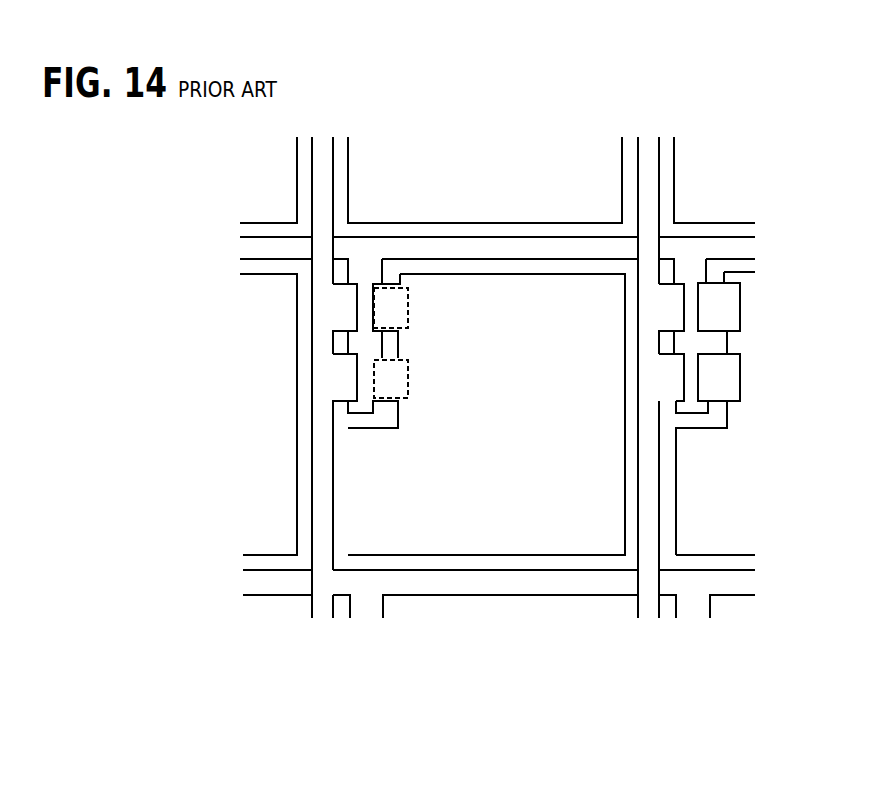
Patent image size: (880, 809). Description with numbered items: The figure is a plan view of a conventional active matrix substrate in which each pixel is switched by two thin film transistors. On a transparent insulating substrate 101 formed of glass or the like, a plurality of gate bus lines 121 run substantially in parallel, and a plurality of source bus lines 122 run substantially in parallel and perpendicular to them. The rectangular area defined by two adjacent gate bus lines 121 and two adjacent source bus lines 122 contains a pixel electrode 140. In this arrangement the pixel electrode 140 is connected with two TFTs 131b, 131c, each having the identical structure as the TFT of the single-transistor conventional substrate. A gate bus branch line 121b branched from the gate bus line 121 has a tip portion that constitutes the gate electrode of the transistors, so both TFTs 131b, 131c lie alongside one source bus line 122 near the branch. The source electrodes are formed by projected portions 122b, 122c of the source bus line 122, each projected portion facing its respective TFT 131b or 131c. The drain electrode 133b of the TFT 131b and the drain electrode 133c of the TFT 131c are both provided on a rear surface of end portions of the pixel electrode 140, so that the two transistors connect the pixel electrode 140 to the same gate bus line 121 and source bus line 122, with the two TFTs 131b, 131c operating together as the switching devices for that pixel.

The transparent insulating substrate 101 is at (698, 563).
The gate bus line 121 is at (463, 248).
The gate bus branch line 121b is at (372, 407).
The source bus line 122 is at (323, 175).
The projected portion of source bus line 122b is at (332, 306).
The projected portion of source bus line 122c is at (337, 377).
The TFT 131b is at (363, 302).
The TFT 131c is at (364, 368).
The drain electrode 133b is at (409, 324).
The drain electrode 133c is at (409, 396).
The pixel electrode 140 is at (562, 460).